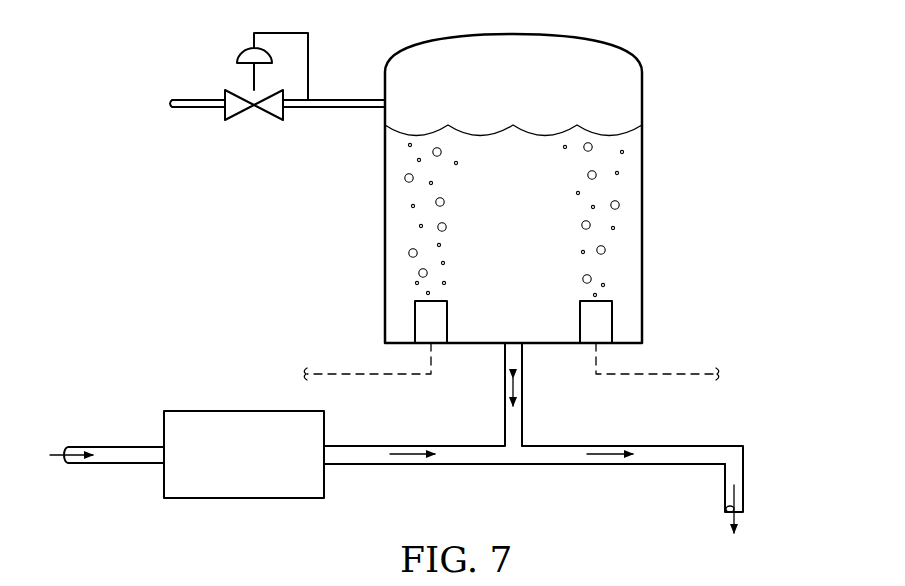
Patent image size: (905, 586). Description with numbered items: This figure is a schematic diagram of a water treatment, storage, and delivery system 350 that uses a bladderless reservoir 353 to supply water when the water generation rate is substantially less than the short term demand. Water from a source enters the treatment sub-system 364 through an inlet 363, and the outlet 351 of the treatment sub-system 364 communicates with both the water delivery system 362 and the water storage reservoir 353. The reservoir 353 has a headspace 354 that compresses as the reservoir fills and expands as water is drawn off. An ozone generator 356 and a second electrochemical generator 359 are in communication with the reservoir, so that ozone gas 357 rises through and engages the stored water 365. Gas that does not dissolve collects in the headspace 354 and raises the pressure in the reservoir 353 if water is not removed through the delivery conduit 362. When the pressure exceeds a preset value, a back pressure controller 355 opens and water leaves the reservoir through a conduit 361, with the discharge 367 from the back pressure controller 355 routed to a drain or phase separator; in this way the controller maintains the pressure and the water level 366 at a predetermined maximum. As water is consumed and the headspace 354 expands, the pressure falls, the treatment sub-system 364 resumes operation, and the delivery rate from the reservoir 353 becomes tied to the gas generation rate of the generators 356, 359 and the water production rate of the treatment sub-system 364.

The water treatment, storage, and delivery system 350 is at (762, 78).
The outlet 351 is at (387, 444).
The bladderless reservoir 353 is at (606, 42).
The headspace 354 is at (536, 88).
The back pressure controller 355 is at (255, 110).
The ozone generator 356 is at (415, 313).
The ozone gas 357 is at (409, 250).
The electrochemical generator 359 is at (612, 318).
The conduit 361 is at (333, 108).
The water delivery system 362 is at (662, 444).
The inlet 363 is at (90, 445).
The treatment sub-system 364 is at (268, 466).
The water 365 is at (536, 237).
The water level 366 is at (643, 130).
The discharge 367 is at (200, 100).